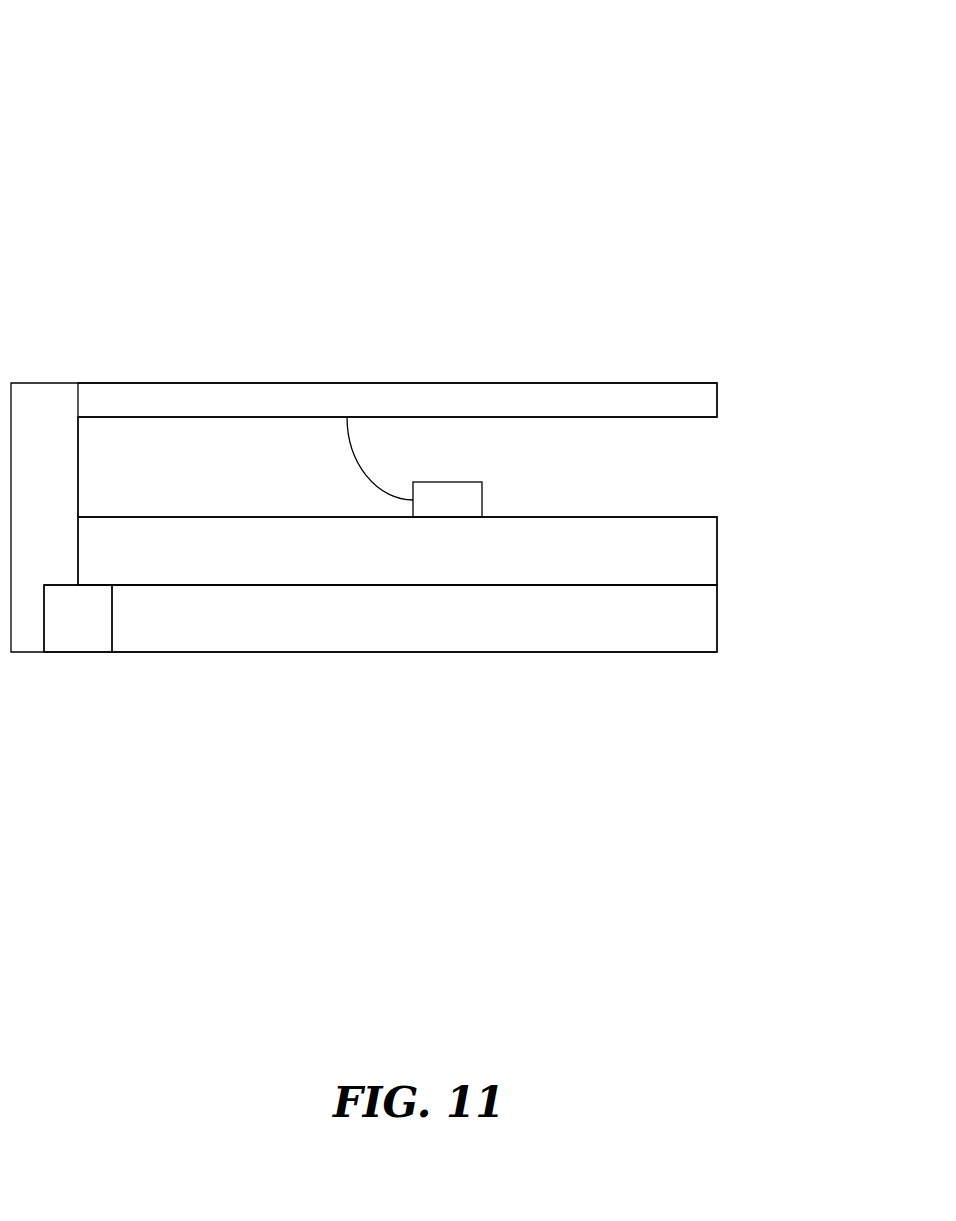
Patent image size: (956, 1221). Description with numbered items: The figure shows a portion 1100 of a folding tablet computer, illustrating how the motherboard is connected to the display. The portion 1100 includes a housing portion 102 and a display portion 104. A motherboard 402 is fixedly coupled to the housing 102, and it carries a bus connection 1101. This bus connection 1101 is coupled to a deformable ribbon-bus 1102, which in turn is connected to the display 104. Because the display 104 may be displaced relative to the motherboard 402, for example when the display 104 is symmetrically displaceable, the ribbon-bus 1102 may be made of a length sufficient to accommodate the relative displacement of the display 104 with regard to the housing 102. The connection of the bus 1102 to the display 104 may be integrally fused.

The portion of a folding tablet computer 1100 is at (150, 100).
The display portion 104 is at (263, 400).
The motherboard 402 is at (692, 543).
The housing portion 102 is at (263, 625).
The bus connection 1101 is at (473, 492).
The deformable ribbon-bus 1102 is at (349, 442).